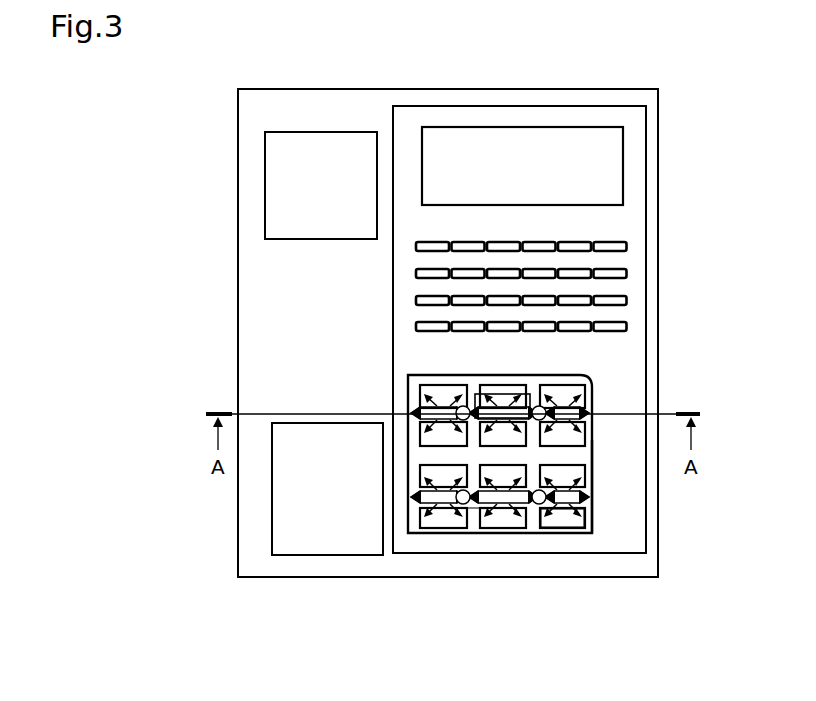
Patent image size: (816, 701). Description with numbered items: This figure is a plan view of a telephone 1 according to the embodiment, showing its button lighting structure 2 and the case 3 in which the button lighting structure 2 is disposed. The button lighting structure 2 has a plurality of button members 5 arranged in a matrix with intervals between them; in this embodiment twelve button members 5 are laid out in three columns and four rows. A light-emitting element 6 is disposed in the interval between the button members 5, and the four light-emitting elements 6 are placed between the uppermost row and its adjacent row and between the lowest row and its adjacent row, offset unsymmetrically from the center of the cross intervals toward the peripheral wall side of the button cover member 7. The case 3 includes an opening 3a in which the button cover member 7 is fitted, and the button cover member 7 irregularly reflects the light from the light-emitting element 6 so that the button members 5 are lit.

The telephone 1 is at (676, 166).
The button lighting structure 2 is at (624, 390).
The case 3 is at (422, 543).
The opening 3a is at (593, 515).
The button member 5 is at (563, 515).
The light-emitting element 6 is at (540, 404).
The button cover member 7 is at (475, 515).